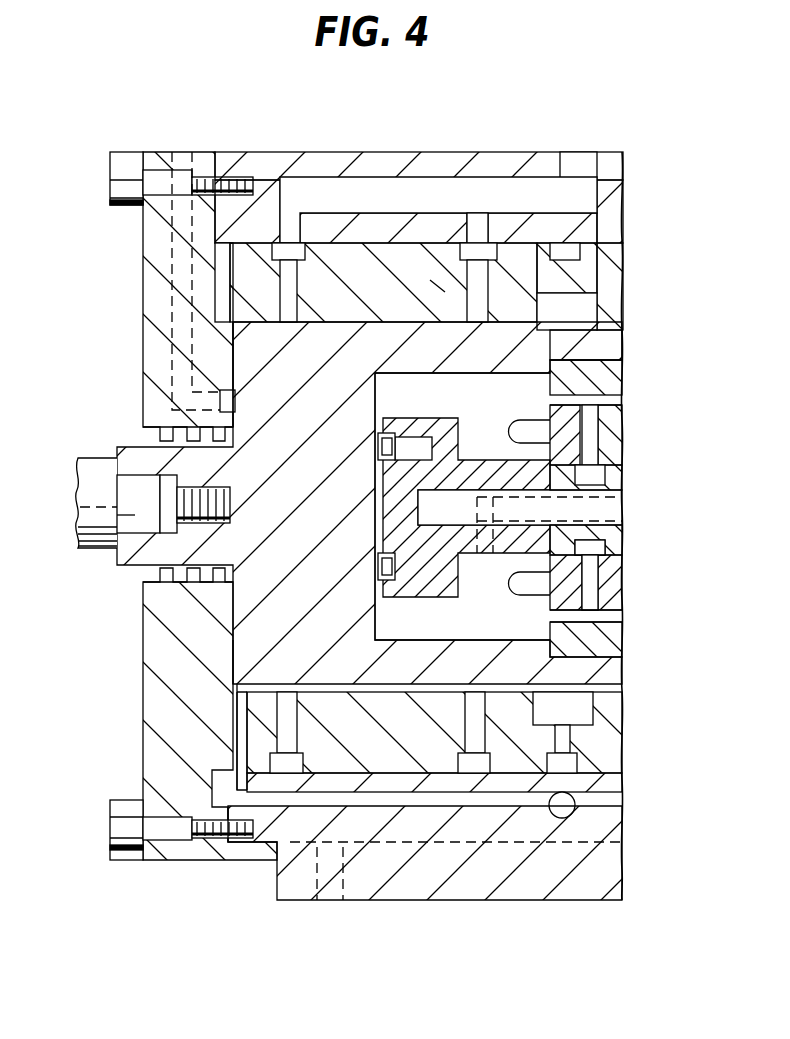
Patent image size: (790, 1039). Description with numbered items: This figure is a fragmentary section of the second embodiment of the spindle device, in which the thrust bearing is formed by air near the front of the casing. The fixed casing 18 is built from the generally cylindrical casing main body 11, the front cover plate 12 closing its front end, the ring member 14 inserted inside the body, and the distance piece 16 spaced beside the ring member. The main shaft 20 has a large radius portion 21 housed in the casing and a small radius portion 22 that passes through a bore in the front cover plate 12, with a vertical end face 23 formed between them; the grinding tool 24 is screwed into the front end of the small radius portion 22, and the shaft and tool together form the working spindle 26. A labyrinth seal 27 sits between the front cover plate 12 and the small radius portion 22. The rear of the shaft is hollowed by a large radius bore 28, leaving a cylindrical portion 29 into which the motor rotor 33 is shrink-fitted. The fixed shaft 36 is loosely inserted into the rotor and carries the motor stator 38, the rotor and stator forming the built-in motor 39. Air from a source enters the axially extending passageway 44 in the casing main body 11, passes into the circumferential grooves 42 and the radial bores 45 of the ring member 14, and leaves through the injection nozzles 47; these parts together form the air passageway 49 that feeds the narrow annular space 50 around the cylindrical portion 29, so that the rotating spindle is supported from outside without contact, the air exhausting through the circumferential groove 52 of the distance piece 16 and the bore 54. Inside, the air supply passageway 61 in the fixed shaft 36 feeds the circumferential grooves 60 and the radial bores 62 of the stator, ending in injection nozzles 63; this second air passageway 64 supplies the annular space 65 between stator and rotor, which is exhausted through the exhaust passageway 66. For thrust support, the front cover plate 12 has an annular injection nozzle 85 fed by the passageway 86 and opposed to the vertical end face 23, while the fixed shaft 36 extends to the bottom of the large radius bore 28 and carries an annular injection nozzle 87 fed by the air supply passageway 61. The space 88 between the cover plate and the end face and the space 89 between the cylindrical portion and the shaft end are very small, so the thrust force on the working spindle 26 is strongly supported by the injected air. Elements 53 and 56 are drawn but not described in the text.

The casing main body 11 is at (447, 162).
The front cover plate 12 is at (153, 257).
The ring member 14 is at (378, 243).
The distance piece 16 is at (592, 268).
The fixed casing 18 is at (215, 152).
The main shaft 20 is at (250, 648).
The large radius portion 21 is at (327, 690).
The small radius portion 22 is at (132, 560).
The vertical end face 23 is at (233, 357).
The grinding tool 24 is at (80, 460).
The working spindle 26 is at (112, 443).
The labyrinth seal 27 is at (167, 582).
The large radius bore 28 is at (425, 375).
The cylindrical portion 29 is at (608, 352).
The motor rotor 33 is at (612, 382).
The fixed shaft 36 is at (610, 538).
The motor stator 38 is at (612, 596).
The built-in motor 39 is at (627, 560).
The circumferential grooves 42 is at (480, 243).
The axially extending passageway 44 is at (537, 200).
The radial bores 45 is at (440, 290).
The injection nozzles 47 is at (488, 340).
The air passageway 49 is at (566, 198).
The annular space 50 is at (615, 328).
The circumferential groove 52 is at (585, 245).
The bolt 53 is at (595, 742).
The bore 54 is at (237, 738).
The base plate 56 is at (495, 800).
The circumferential grooves 60 is at (600, 460).
The air supply passageway 61 is at (608, 502).
The radial bores 62 is at (585, 428).
The injection nozzles 63 is at (615, 650).
The second air passageway 64 is at (678, 545).
The annular space 65 is at (615, 618).
The exhaust passageway 66 is at (513, 525).
The annular injection nozzle 85 is at (222, 395).
The passageway 86 is at (230, 250).
The annular injection nozzle 87 is at (380, 441).
The space 88 is at (233, 663).
The space 89 is at (378, 580).